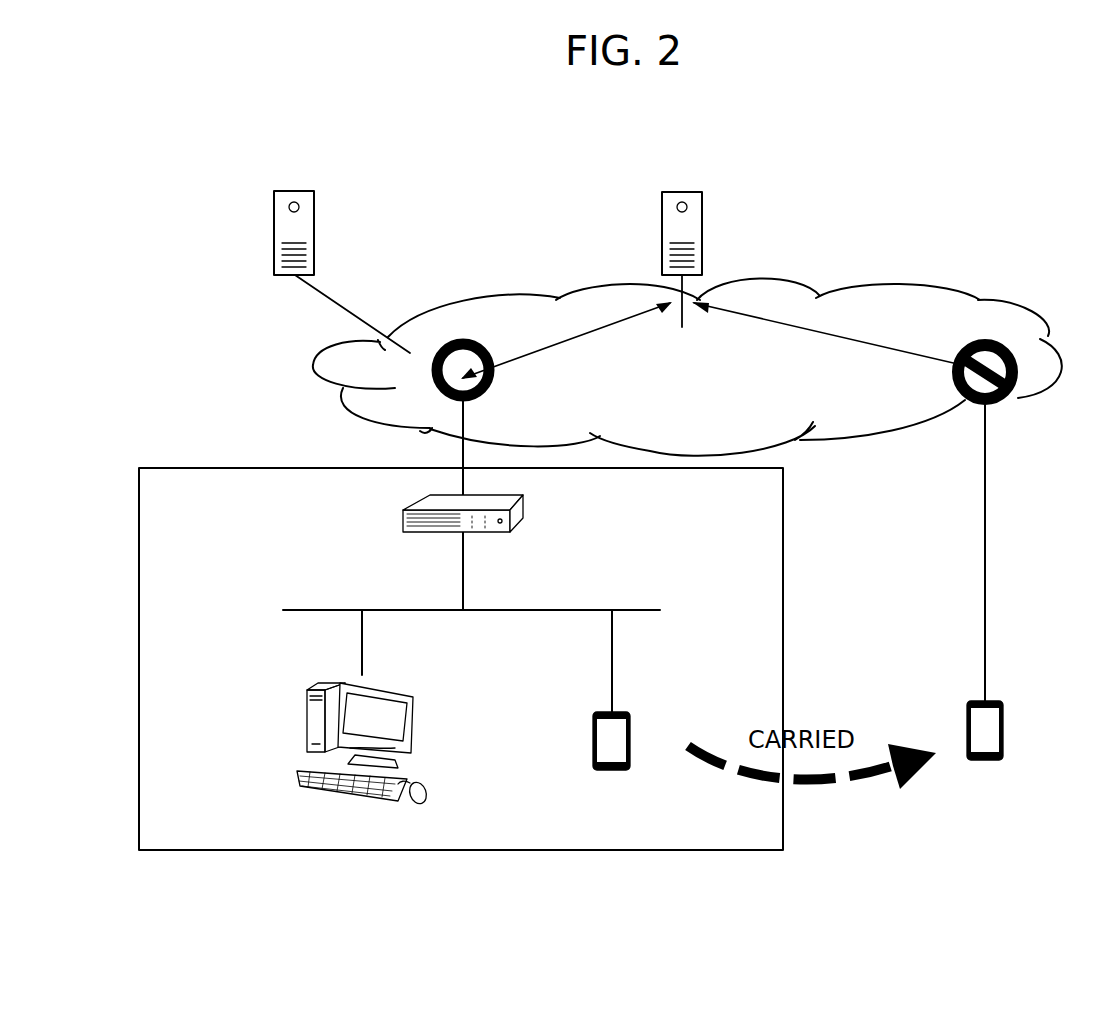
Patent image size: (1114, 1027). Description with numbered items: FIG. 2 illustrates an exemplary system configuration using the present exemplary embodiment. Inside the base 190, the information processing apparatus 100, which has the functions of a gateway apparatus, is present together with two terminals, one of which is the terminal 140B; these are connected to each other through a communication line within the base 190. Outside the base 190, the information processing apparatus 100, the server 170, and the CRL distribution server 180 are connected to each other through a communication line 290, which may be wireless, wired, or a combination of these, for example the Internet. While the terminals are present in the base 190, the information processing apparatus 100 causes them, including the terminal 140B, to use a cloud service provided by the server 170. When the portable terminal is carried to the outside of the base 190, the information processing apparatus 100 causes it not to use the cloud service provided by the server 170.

The CRL distribution server 180 is at (296, 191).
The server 170 is at (684, 192).
The communication line 290 is at (935, 295).
The base 190 is at (200, 468).
The information processing apparatus 100 is at (523, 508).
The terminal 140B is at (415, 713).